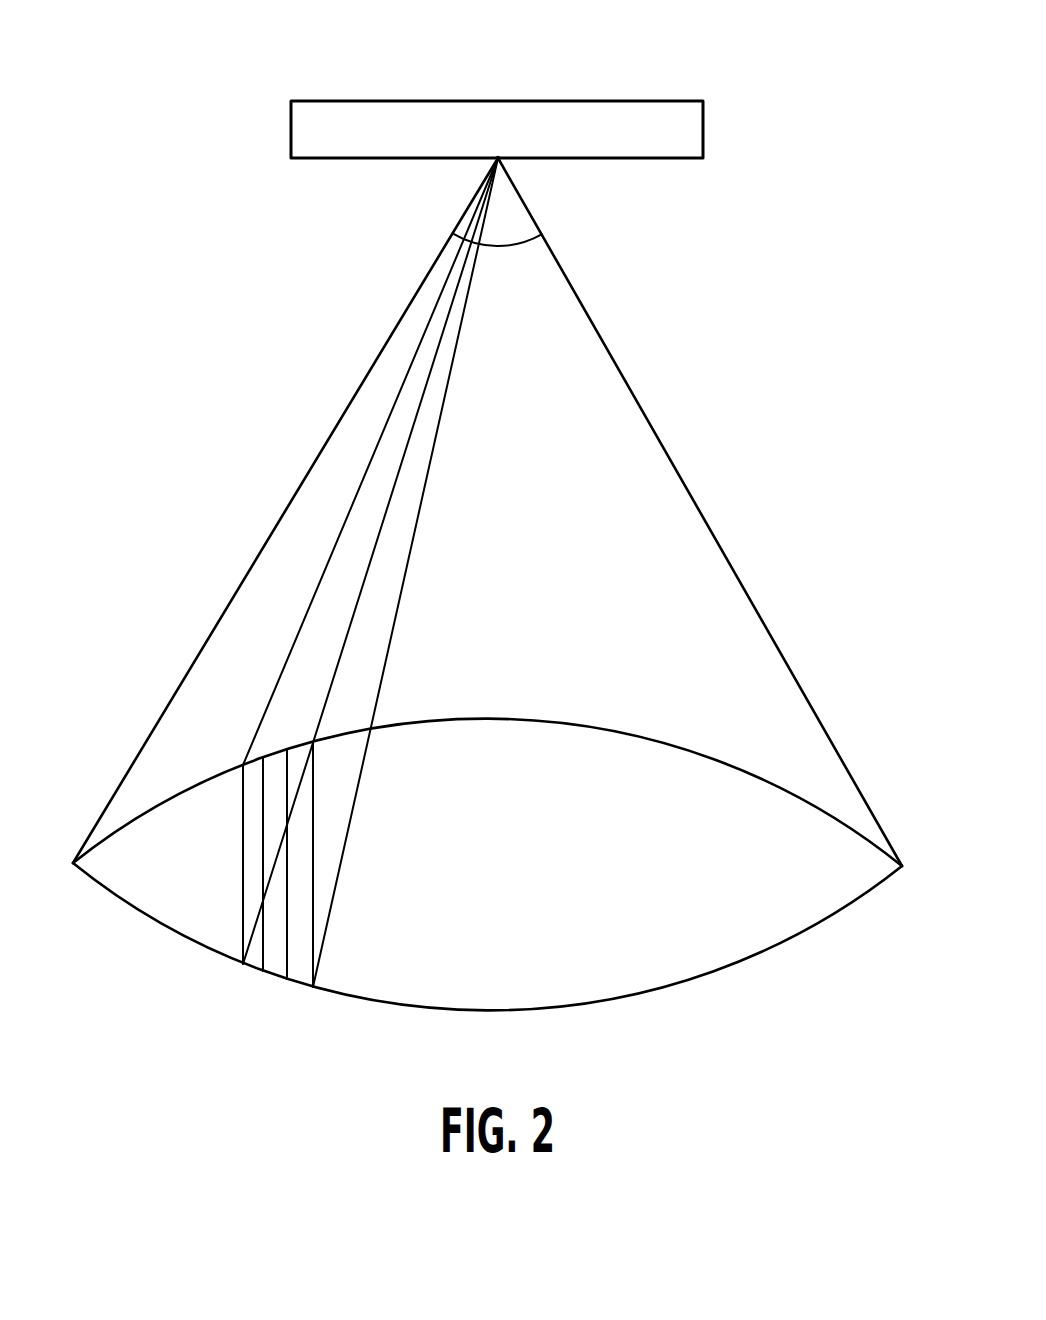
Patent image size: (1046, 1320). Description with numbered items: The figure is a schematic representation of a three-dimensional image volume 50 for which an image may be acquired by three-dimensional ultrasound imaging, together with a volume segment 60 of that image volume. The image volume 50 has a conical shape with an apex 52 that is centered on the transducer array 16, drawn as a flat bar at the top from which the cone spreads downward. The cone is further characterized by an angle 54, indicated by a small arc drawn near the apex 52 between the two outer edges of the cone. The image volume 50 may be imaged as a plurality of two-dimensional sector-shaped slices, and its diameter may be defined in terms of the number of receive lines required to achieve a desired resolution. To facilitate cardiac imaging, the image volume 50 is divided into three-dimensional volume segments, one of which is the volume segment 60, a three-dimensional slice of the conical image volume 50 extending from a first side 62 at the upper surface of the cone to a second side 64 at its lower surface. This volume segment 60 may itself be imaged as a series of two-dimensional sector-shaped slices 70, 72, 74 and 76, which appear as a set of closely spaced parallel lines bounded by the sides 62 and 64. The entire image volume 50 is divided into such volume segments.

The transducer array 16 is at (613, 102).
The apex 52 is at (498, 157).
The angle 54 is at (520, 242).
The image volume 50 is at (662, 445).
The volume segment 60 is at (400, 595).
The first side 62 is at (284, 758).
The second side 64 is at (293, 985).
The two-dimensional sector-shaped slice 70 is at (242, 813).
The two-dimensional sector-shaped slice 72 is at (263, 852).
The two-dimensional sector-shaped slice 74 is at (287, 852).
The two-dimensional sector-shaped slice 76 is at (312, 878).